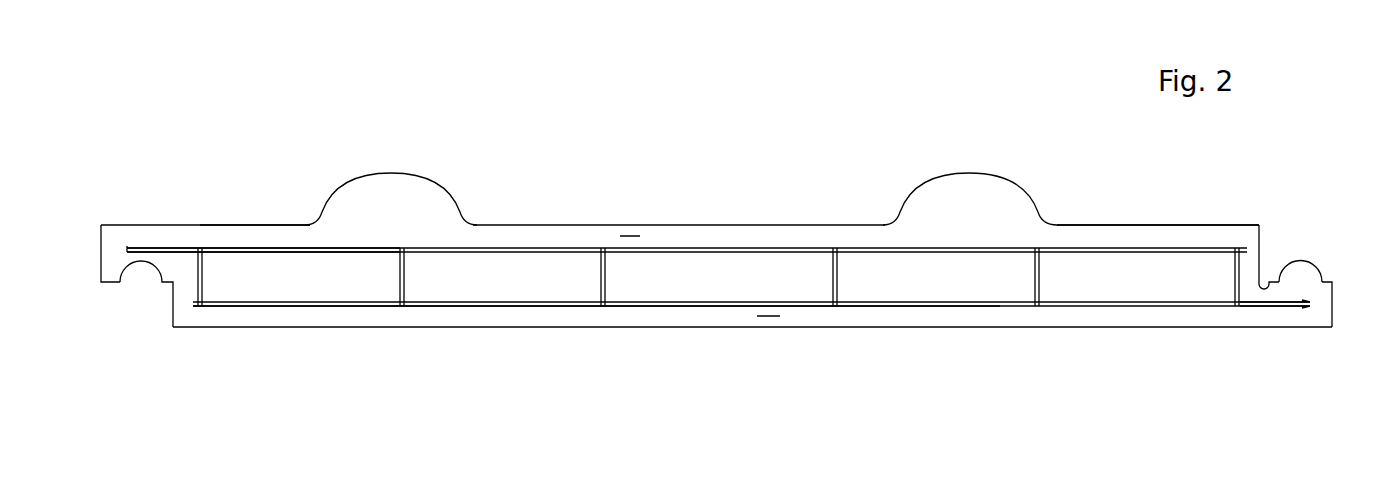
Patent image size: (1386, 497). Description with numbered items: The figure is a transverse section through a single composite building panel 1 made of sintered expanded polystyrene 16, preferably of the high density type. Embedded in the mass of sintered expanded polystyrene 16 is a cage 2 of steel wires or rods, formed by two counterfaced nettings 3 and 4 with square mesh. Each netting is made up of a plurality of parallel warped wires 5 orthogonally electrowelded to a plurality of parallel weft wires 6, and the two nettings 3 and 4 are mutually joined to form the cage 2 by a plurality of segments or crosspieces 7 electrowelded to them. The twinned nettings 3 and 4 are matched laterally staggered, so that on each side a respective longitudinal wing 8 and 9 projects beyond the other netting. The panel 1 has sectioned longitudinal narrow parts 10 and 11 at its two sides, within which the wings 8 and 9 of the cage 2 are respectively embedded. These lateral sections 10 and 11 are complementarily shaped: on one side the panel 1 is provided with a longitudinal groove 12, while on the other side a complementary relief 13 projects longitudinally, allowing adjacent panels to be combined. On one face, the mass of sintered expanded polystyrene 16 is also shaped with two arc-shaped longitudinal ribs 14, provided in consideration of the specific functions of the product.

The composite building panel 1 is at (540, 210).
The cage 2 is at (1185, 322).
The netting 3 is at (722, 248).
The netting 4 is at (452, 307).
The warped wires 5 is at (280, 248).
The weft wires 6 is at (300, 307).
The crosspieces 7 is at (607, 272).
The longitudinal wing 8 is at (160, 250).
The longitudinal wing 9 is at (1300, 307).
The longitudinal narrow part 10 is at (115, 236).
The longitudinal narrow part 11 is at (1322, 318).
The longitudinal groove 12 is at (133, 268).
The complementary relief 13 is at (1305, 278).
The arc-shaped longitudinal ribs 14 is at (390, 185).
The sintered expanded polystyrene 16 is at (620, 236).